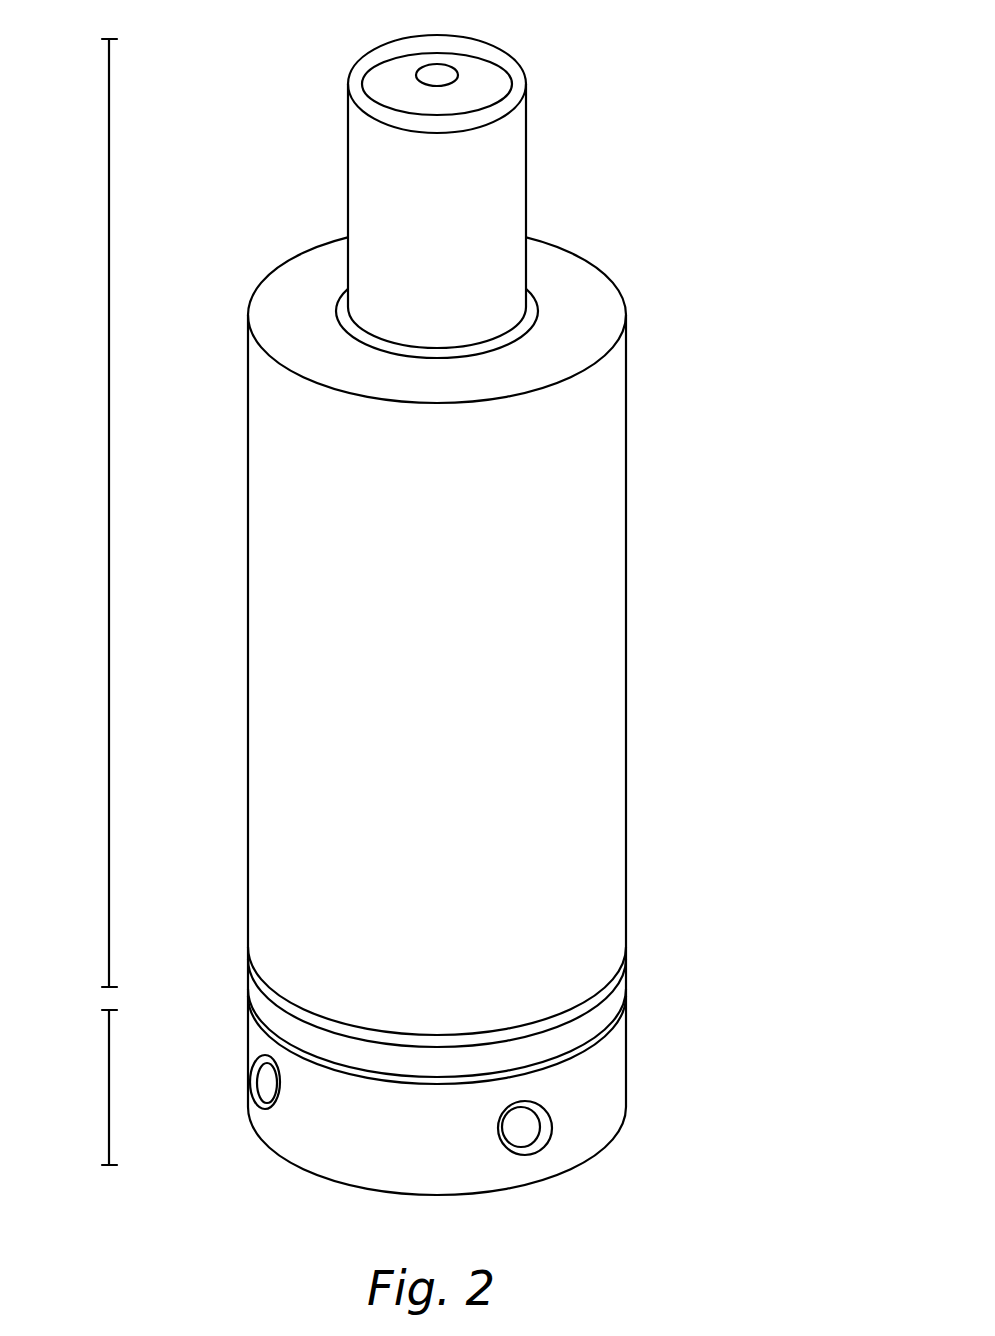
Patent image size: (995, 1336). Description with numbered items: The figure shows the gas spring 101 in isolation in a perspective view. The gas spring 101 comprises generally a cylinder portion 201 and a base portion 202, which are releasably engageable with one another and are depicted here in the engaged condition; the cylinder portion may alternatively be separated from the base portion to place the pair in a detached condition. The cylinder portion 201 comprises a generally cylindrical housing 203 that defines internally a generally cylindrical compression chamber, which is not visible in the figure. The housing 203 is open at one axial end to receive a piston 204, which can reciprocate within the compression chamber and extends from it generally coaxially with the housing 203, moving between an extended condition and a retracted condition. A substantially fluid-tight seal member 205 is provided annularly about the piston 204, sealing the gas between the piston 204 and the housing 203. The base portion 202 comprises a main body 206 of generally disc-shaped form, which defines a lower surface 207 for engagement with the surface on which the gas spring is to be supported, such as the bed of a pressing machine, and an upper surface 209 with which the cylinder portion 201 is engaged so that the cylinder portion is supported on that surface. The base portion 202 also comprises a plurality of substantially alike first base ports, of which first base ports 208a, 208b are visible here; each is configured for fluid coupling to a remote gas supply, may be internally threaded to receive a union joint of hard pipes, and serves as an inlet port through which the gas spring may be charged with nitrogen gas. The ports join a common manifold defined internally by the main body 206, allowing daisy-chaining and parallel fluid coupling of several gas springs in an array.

The gas spring 101 is at (701, 58).
The cylinder portion 201 is at (109, 455).
The base portion 202 is at (109, 1094).
The housing 203 is at (603, 598).
The piston 204 is at (515, 180).
The seal member 205 is at (531, 308).
The main body 206 is at (605, 1089).
The lower surface 207 is at (608, 1150).
The first base port 208a is at (527, 1130).
The first base port 208b is at (270, 1090).
The upper surface 209 is at (622, 1000).